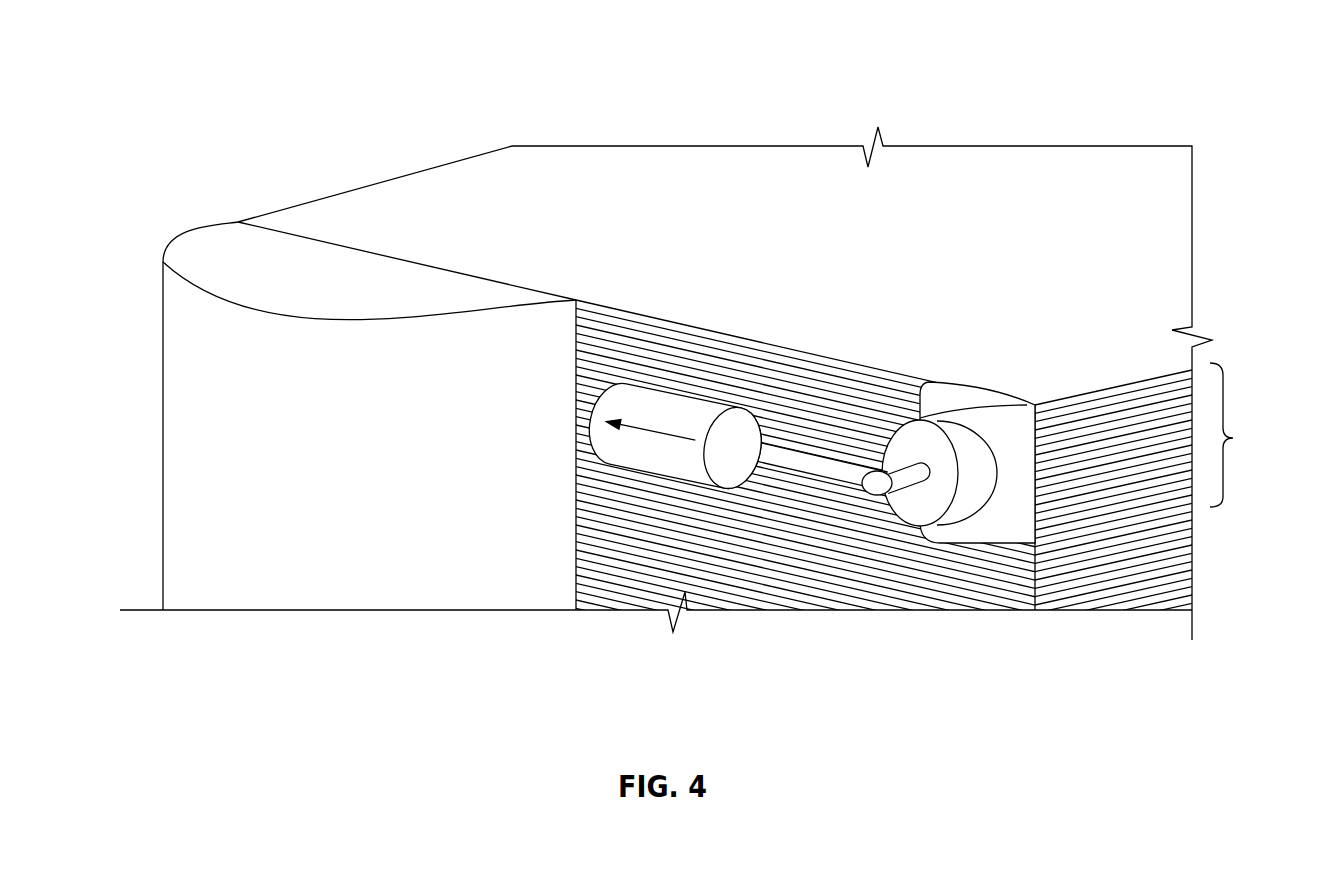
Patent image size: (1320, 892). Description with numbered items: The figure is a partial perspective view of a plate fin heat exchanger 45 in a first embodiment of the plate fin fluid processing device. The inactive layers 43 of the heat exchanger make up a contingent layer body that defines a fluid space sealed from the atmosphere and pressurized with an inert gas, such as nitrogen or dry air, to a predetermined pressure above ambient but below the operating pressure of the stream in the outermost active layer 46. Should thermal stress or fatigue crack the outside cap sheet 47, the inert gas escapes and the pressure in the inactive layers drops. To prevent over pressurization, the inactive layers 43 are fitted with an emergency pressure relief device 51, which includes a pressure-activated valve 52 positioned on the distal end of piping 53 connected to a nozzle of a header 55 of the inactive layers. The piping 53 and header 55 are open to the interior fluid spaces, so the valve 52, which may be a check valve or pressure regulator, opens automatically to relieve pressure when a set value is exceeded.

The inactive layers 43 is at (1241, 435).
The plate fin heat exchanger 45 is at (369, 166).
The outermost active layer 46 is at (1180, 525).
The outside cap sheet 47 is at (830, 245).
The emergency pressure relief device 51 is at (828, 337).
The pressure-activated valve 52 is at (637, 453).
The piping 53 is at (798, 468).
The header 55 is at (975, 527).